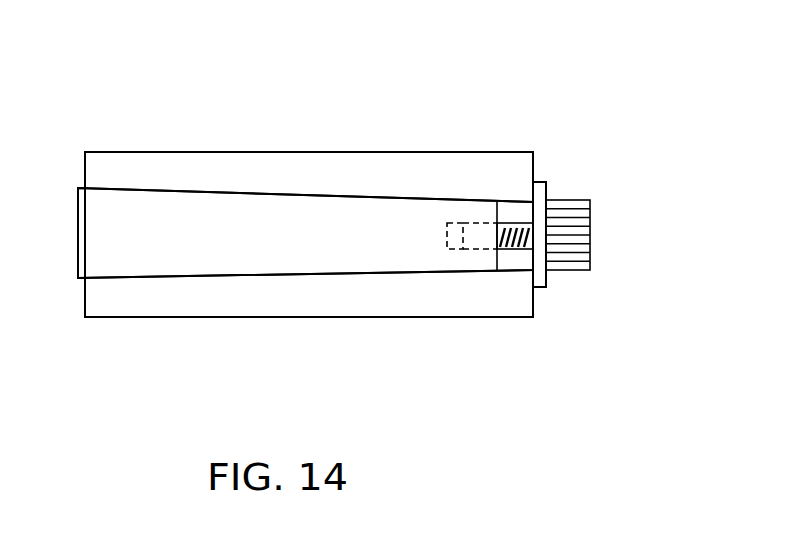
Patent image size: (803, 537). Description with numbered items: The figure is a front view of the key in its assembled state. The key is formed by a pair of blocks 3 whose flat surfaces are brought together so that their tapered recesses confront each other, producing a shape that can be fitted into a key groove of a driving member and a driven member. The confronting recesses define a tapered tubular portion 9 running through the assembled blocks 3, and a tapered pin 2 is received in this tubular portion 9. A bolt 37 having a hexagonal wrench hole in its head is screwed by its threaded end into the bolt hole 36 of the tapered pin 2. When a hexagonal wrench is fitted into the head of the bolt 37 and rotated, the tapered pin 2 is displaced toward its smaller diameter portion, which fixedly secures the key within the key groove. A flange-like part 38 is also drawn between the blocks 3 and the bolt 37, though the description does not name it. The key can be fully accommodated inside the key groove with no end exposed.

The tapered pin 2 is at (307, 193).
The block 3 is at (475, 152).
The tapered tubular portion 9 is at (398, 198).
The bolt hole 36 is at (453, 249).
The bolt 37 is at (592, 233).
The flange 38 is at (539, 288).